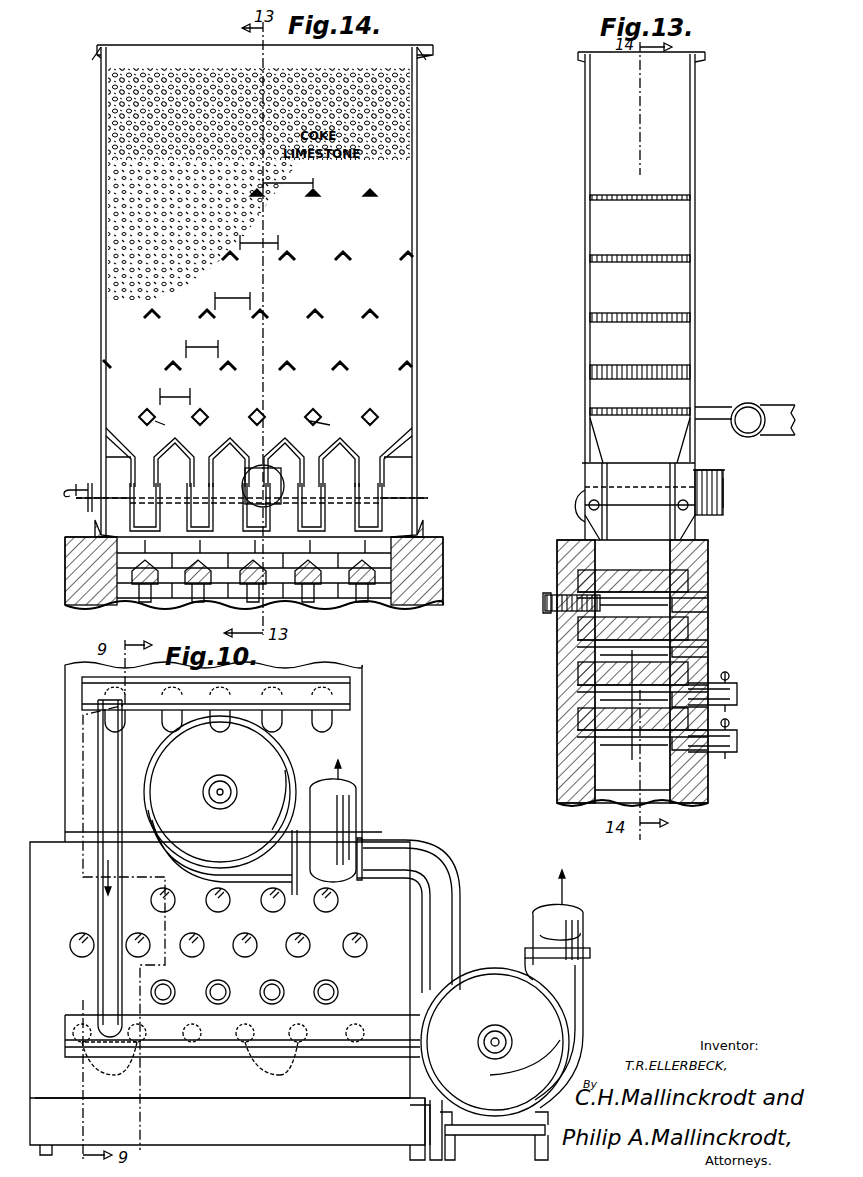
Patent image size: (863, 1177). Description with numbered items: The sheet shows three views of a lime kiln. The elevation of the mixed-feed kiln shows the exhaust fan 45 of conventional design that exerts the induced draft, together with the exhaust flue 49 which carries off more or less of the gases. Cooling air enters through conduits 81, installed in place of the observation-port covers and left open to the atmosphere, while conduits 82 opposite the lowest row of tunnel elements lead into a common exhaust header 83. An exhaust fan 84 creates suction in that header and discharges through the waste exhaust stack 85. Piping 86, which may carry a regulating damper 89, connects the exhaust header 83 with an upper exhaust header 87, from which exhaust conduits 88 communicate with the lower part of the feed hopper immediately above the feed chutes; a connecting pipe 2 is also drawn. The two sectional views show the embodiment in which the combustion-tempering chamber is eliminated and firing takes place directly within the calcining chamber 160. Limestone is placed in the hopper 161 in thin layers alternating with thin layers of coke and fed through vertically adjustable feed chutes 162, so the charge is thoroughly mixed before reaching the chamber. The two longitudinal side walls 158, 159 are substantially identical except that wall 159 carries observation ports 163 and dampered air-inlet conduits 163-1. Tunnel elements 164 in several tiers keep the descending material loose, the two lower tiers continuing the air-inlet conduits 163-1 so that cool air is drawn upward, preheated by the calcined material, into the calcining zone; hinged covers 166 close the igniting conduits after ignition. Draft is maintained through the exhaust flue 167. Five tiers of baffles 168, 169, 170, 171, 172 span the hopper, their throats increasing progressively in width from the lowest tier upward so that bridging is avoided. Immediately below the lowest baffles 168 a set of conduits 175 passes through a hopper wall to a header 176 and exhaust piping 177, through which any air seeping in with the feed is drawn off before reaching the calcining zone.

In FIG. 10, the connecting pipe 2 is at (395, 852).
In FIG. 10, the exhaust fan 45 is at (275, 775).
In FIG. 10, the exhaust flue 49 is at (340, 825).
In FIG. 10, the conduits 81 is at (300, 976).
In FIG. 10, the conduits 82 is at (218, 1054).
In FIG. 10, the exhaust header 83 is at (222, 1057).
In FIG. 10, the exhaust fan 84 is at (478, 1000).
In FIG. 10, the waste exhaust stack 85 is at (585, 925).
In FIG. 10, the piping 86 is at (98, 878).
In FIG. 10, the upper exhaust header 87 is at (300, 690).
In FIG. 10, the exhaust conduits 88 is at (295, 735).
In FIG. 10, the regulating damper 89 is at (90, 770).
In FIG. 13, the longitudinal side wall 158 is at (605, 685).
In FIG. 13, the longitudinal side wall 159 is at (700, 665).
In FIG. 14, the calcining chamber 160 is at (320, 598).
In FIG. 13, the calcining chamber 160 is at (632, 673).
In FIG. 14, the hopper 161 is at (418, 205).
In FIG. 13, the hopper 161 is at (697, 158).
In FIG. 14, the feed chutes 162 is at (372, 470).
In FIG. 13, the feed chutes 162 is at (650, 515).
In FIG. 14, the observation ports 163 is at (308, 602).
In FIG. 13, the observation ports 163 is at (690, 600).
In FIG. 13, the dampered air-inlet conduits 163-1 is at (745, 690).
In FIG. 14, the tunnel elements 164 is at (196, 584).
In FIG. 13, the tunnel elements 164 is at (578, 718).
In FIG. 13, the hinged covers 166 is at (548, 625).
In FIG. 14, the exhaust flue 167 is at (248, 498).
In FIG. 13, the exhaust flue 167 is at (723, 488).
In FIG. 14, the baffles 168 is at (208, 412).
In FIG. 13, the baffles 168 is at (650, 398).
In FIG. 14, the baffles 169 is at (232, 366).
In FIG. 13, the baffles 169 is at (652, 354).
In FIG. 14, the baffles 170 is at (264, 310).
In FIG. 13, the baffles 170 is at (645, 312).
In FIG. 14, the baffles 171 is at (292, 256).
In FIG. 13, the baffles 171 is at (634, 254).
In FIG. 14, the baffles 172 is at (318, 193).
In FIG. 13, the baffles 172 is at (636, 194).
In FIG. 14, the conduits 175 is at (234, 426).
In FIG. 13, the conduits 175 is at (712, 406).
In FIG. 13, the header 176 is at (752, 403).
In FIG. 13, the exhaust piping 177 is at (770, 437).